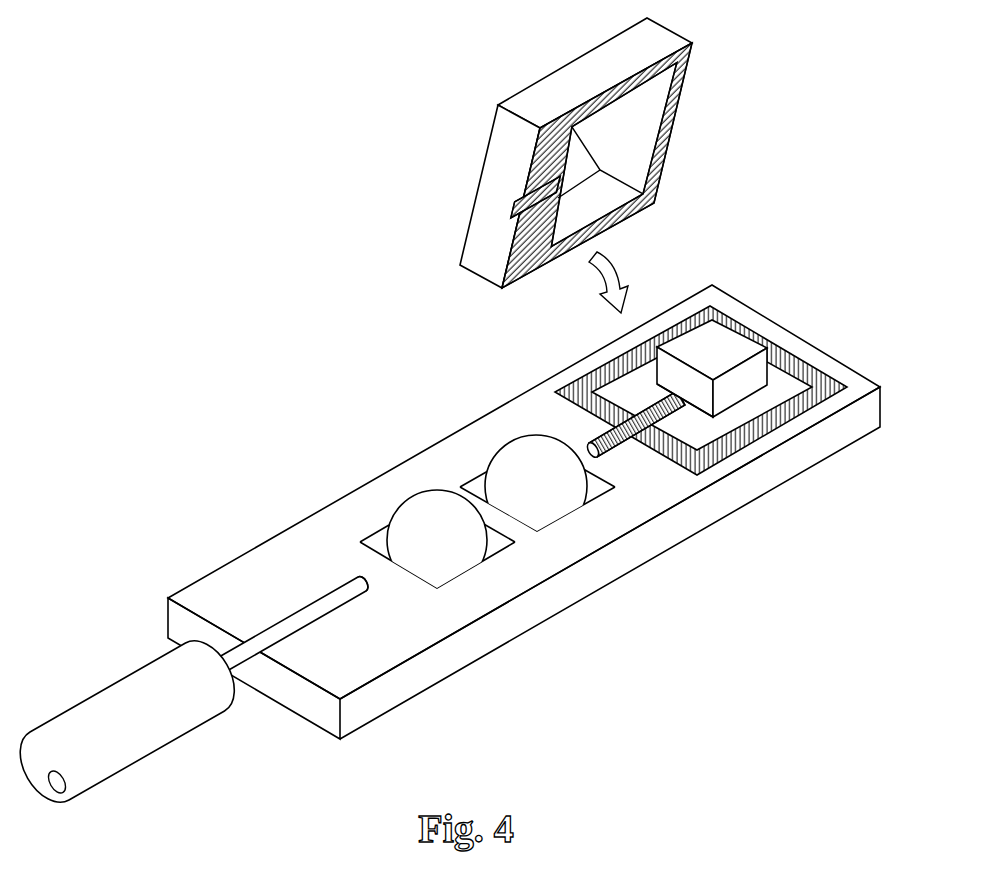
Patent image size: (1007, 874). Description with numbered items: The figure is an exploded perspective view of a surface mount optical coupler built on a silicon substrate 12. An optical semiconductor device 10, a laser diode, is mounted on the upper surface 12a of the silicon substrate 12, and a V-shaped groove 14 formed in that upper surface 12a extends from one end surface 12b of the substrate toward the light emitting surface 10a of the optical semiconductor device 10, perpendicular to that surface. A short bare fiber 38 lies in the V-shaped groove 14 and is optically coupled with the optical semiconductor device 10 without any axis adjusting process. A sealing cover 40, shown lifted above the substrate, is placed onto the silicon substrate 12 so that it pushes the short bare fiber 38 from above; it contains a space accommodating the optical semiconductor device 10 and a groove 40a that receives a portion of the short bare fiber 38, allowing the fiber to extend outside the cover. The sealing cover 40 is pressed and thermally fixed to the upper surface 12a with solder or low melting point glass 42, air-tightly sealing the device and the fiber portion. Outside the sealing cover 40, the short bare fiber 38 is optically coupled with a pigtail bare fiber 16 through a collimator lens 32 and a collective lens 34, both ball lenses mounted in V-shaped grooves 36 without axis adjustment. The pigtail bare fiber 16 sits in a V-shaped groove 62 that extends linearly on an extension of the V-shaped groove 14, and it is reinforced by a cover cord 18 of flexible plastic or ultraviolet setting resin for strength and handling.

The optical semiconductor device 10 is at (726, 398).
The light emitting surface 10a is at (697, 412).
The silicon substrate 12 is at (529, 536).
The upper surface 12a is at (852, 391).
The end surface 12b is at (306, 710).
The V-shaped groove 14 is at (582, 433).
The pigtail bare fiber 16 is at (323, 608).
The cover cord 18 is at (120, 710).
The collimator lens 32 is at (527, 462).
The collective lens 34 is at (422, 512).
The V-shaped grooves 36 is at (600, 487).
The short bare fiber 38 is at (601, 453).
The sealing cover 40 is at (558, 153).
The groove 40a is at (509, 254).
The solder or low melting point glass 42 is at (681, 88).
The V-shaped groove 62 is at (376, 592).